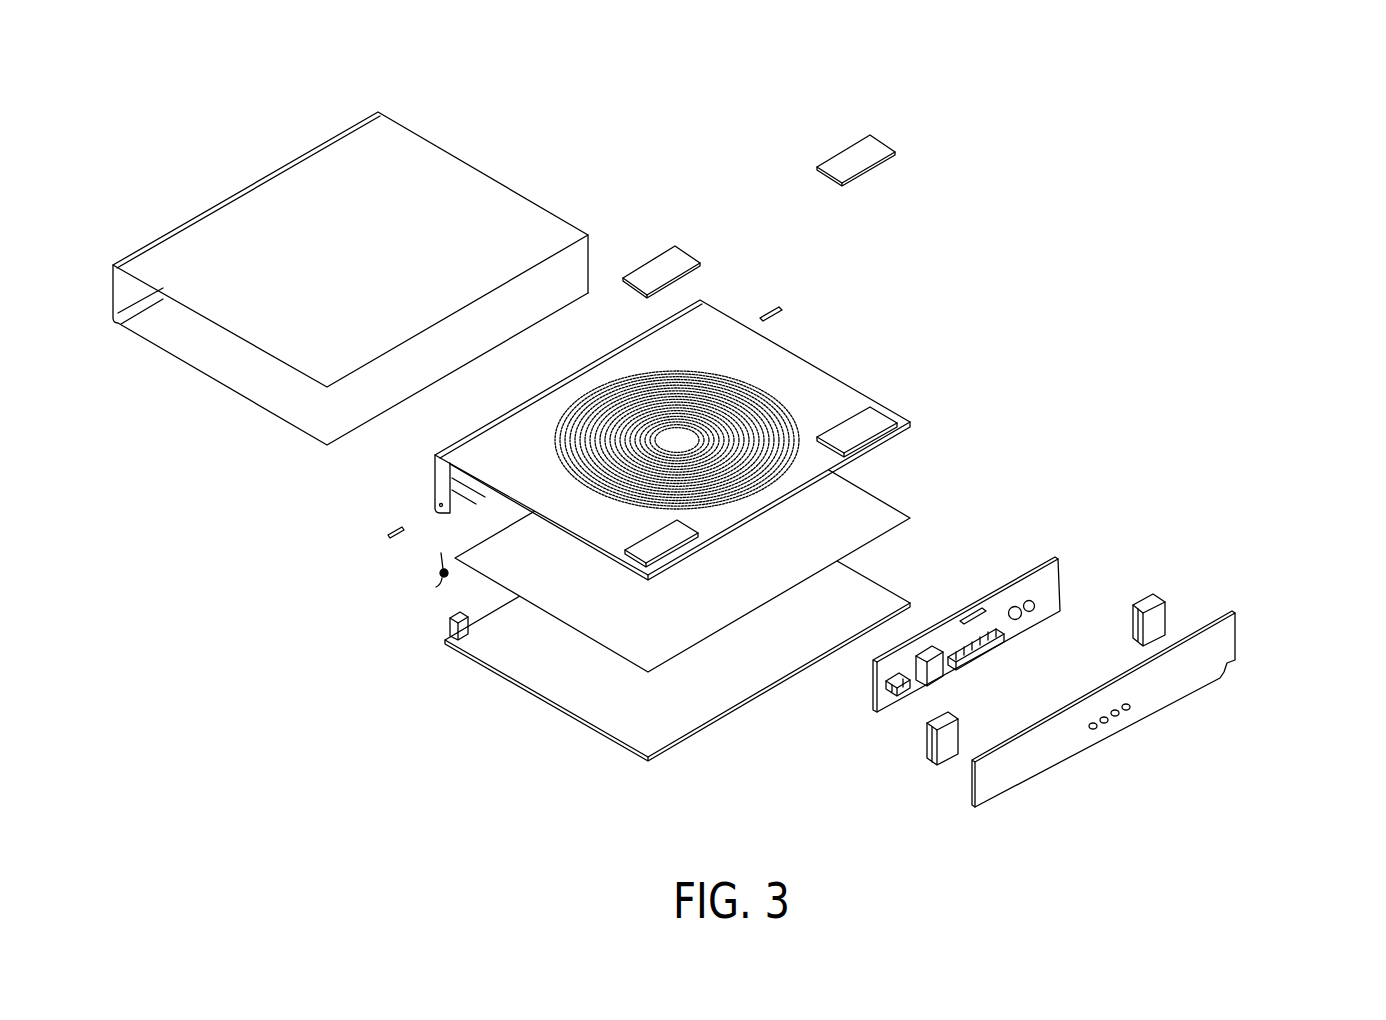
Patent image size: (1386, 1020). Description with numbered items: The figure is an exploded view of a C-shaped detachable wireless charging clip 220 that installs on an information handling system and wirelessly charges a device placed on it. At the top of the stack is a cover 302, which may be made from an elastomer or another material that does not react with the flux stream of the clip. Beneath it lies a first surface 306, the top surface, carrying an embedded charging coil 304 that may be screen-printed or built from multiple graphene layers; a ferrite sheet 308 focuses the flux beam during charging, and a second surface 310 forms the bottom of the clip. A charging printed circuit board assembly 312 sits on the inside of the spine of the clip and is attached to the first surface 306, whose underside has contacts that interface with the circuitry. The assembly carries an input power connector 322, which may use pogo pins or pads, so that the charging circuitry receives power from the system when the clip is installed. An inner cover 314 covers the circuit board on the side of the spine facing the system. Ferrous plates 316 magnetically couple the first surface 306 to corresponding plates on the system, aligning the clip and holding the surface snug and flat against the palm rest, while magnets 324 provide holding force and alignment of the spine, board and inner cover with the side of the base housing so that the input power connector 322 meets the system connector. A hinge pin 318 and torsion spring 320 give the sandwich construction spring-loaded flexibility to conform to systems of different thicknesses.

The detachable wireless charging clip 220 is at (228, 26).
The cover 302 is at (305, 148).
The charging coil 304 is at (782, 403).
The first surface 306 is at (418, 470).
The ferrite sheet 308 is at (843, 498).
The second surface 310 is at (582, 722).
The charging printed circuit board assembly 312 is at (1065, 578).
The inner cover 314 is at (1242, 623).
The ferrous plates 316 is at (905, 153).
The hinge pin 318 is at (383, 521).
The torsion spring 320 is at (435, 571).
The input power connector 322 is at (978, 653).
The magnets 324 is at (958, 739).